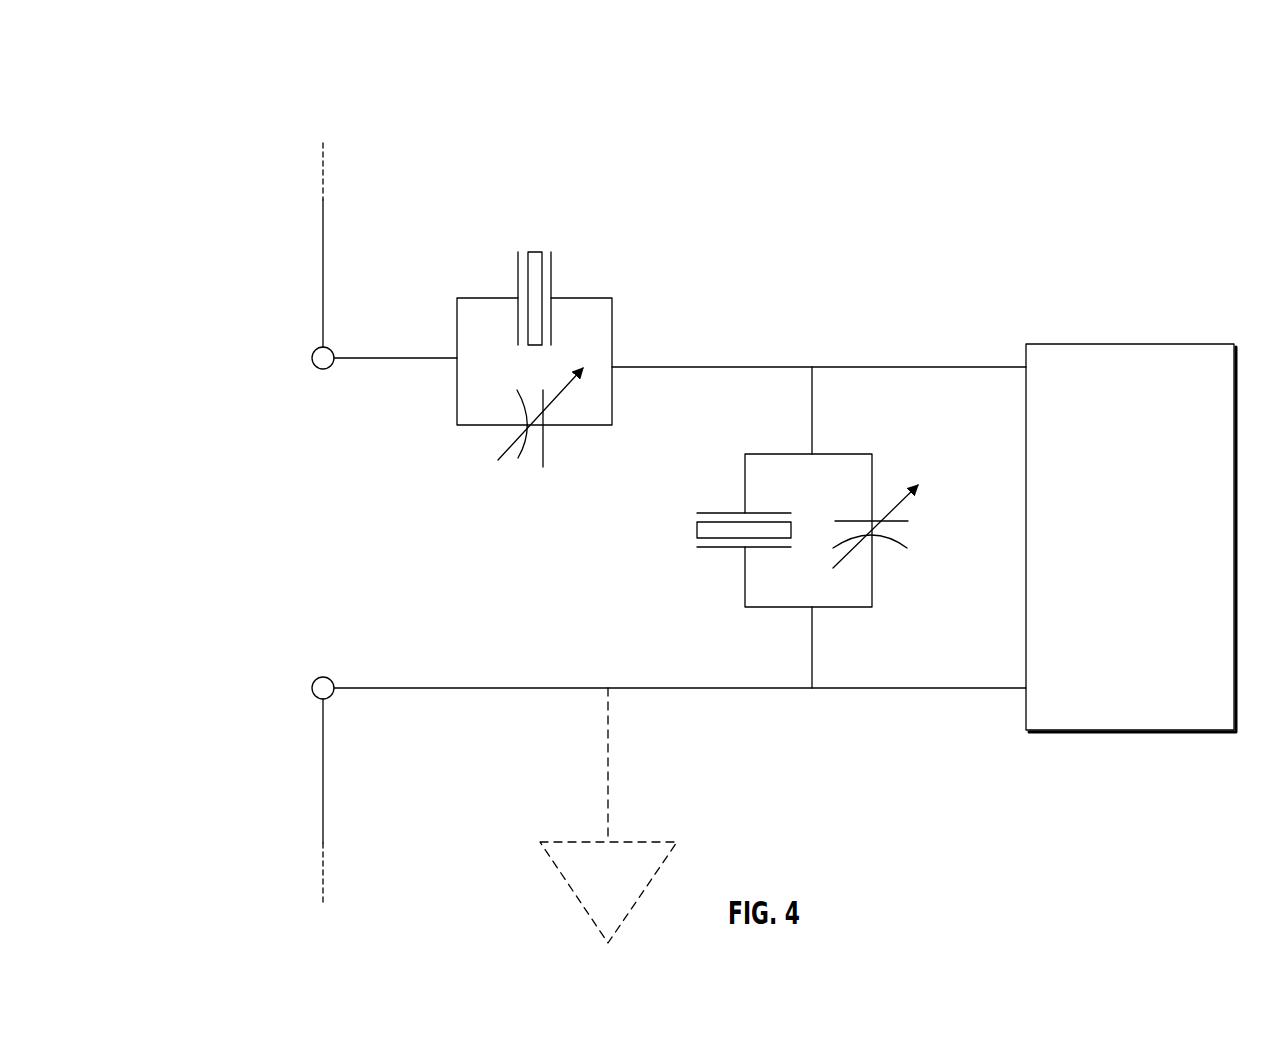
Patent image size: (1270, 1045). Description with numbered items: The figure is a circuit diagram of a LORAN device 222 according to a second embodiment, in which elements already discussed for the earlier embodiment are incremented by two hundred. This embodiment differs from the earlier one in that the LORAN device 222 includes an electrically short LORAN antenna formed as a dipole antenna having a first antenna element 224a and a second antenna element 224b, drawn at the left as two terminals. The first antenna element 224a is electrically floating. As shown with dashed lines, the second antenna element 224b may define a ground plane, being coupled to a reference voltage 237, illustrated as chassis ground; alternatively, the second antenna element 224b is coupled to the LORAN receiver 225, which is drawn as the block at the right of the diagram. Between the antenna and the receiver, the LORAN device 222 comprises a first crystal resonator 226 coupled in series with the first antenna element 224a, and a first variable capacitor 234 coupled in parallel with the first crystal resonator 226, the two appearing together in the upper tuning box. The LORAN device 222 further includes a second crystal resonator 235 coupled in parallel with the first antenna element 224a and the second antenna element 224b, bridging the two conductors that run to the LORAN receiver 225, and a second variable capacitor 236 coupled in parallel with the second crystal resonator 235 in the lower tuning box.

The LORAN device 222 is at (968, 111).
The first antenna element 224a is at (323, 237).
The second antenna element 224b is at (323, 787).
The LORAN receiver 225 is at (1108, 560).
The first crystal resonator 226 is at (553, 259).
The first variable capacitor 234 is at (527, 447).
The second crystal resonator 235 is at (697, 528).
The second variable capacitor 236 is at (892, 535).
The reference voltage 237 is at (627, 882).